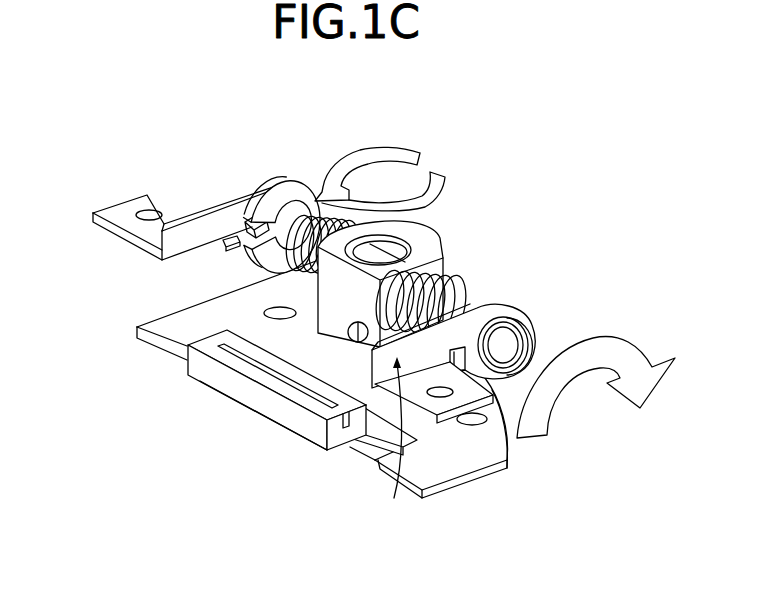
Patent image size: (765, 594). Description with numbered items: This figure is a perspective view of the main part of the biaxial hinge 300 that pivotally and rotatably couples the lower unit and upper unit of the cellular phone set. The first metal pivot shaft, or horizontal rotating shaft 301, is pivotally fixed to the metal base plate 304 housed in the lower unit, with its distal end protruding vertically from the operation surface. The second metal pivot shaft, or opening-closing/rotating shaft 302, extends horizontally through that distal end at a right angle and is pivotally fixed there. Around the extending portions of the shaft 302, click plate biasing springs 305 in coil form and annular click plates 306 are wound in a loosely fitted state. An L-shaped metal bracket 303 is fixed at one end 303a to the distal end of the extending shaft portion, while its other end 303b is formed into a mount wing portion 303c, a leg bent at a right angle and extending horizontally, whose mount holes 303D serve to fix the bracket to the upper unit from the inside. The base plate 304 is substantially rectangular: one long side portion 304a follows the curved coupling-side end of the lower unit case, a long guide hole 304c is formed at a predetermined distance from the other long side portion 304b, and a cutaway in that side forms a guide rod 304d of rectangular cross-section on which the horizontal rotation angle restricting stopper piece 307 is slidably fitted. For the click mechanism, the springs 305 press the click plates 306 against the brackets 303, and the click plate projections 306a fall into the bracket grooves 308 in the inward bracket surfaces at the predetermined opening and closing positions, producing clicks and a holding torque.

The biaxial hinge 300 is at (135, 458).
The first metal pivot shaft 301 is at (415, 232).
The second metal pivot shaft 302 is at (467, 298).
The L-shaped metal bracket 303 is at (100, 230).
The one end of bracket 303a is at (522, 322).
The other end of bracket 303b is at (292, 422).
The mount wing portion 303c is at (115, 213).
The mount hole 303D is at (441, 398).
The base plate 304 is at (173, 325).
The long side portion 304a is at (520, 437).
The other long side portion 304b is at (170, 357).
The long guide hole 304c is at (381, 466).
The guide rod 304d is at (342, 448).
The click plate biasing spring 305 is at (287, 286).
The click plate 306 is at (300, 193).
The click plate projection 306a is at (241, 248).
The horizontal rotation angle restricting stopper piece 307 is at (230, 380).
The bracket groove 308 is at (247, 219).